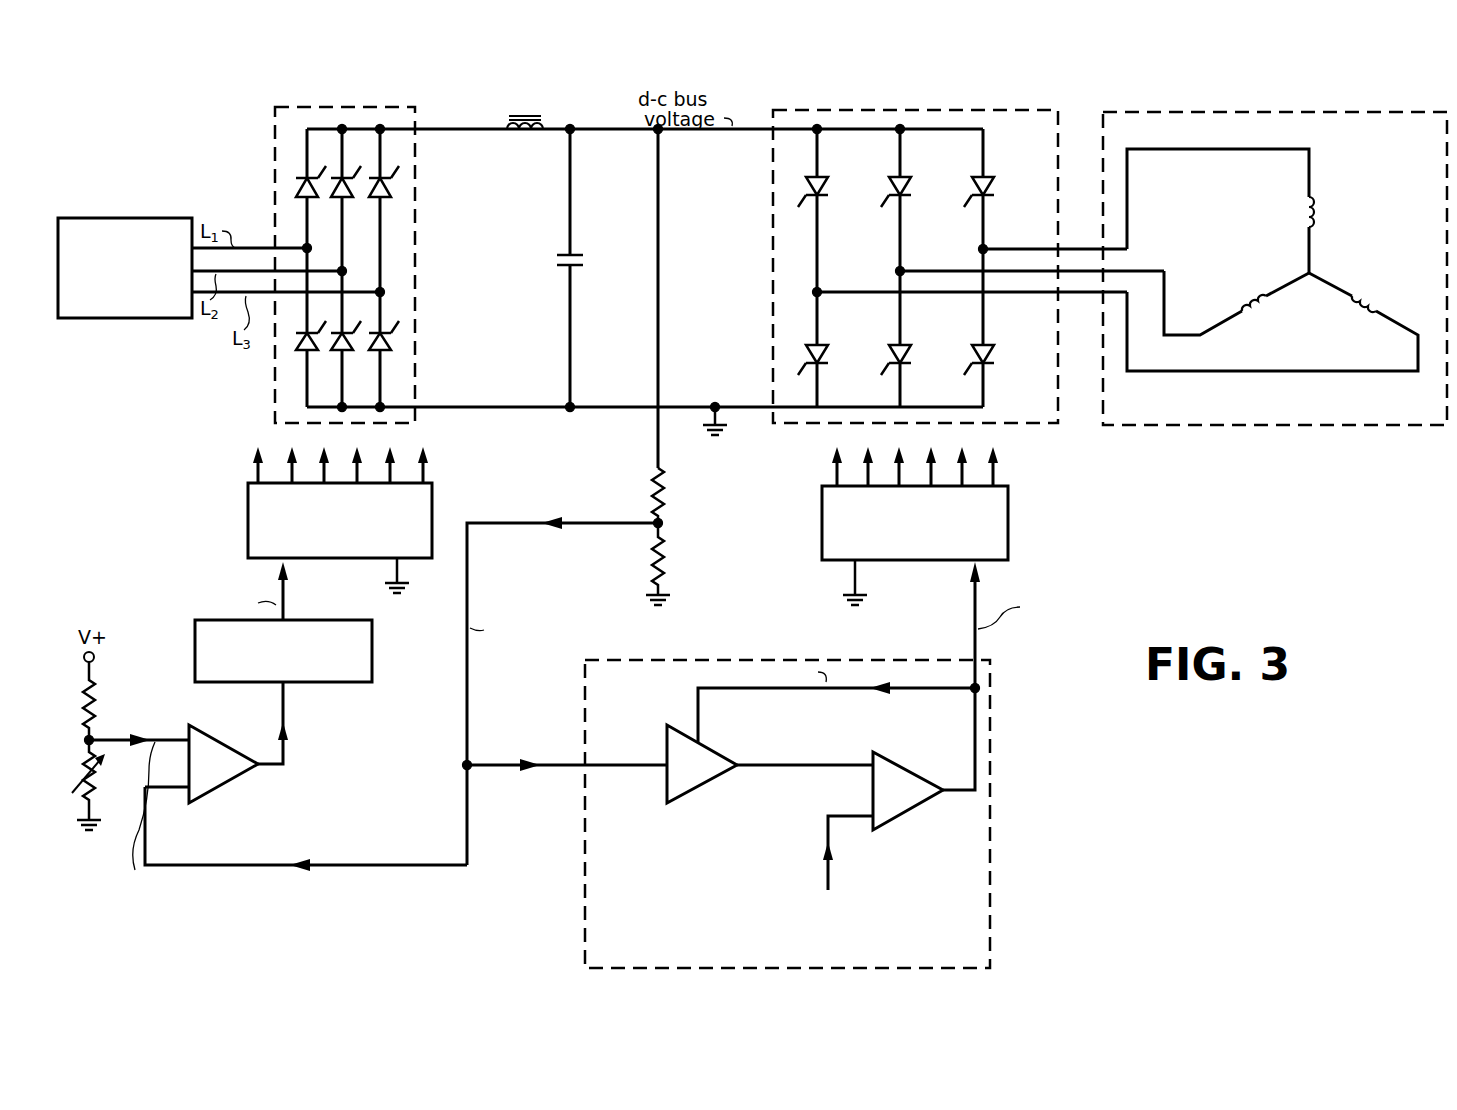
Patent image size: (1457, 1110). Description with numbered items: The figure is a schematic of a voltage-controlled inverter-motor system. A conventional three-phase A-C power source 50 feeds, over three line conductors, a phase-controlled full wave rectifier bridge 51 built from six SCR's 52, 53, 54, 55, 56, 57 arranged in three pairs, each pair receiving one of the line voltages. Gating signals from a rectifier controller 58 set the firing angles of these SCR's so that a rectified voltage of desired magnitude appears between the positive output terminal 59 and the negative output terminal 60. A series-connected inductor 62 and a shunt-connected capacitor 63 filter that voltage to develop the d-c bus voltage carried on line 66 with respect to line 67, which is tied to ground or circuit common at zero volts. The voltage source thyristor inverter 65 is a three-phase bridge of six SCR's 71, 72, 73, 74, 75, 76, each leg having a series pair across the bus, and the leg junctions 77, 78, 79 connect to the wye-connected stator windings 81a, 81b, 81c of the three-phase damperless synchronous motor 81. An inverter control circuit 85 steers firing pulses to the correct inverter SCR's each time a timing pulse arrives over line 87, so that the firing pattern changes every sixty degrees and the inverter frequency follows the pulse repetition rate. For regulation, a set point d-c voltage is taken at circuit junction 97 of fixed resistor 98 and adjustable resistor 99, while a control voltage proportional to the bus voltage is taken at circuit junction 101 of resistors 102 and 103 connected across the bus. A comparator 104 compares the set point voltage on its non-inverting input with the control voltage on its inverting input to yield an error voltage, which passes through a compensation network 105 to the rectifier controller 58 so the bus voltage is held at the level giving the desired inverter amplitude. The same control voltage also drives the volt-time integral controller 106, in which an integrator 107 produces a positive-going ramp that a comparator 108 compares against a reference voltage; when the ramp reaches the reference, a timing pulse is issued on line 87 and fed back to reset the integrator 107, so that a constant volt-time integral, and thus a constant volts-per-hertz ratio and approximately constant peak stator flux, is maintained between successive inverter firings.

The three-phase A-C power source 50 is at (120, 218).
The phase-controlled full wave rectifier bridge 51 is at (414, 107).
The SCR 52 is at (318, 190).
The SCR 53 is at (353, 190).
The SCR 54 is at (391, 190).
The SCR 55 is at (318, 344).
The SCR 56 is at (353, 344).
The SCR 57 is at (391, 344).
The rectifier controller 58 is at (248, 520).
The positive output terminal 59 is at (378, 126).
The negative output terminal 60 is at (387, 407).
The inductor 62 is at (525, 133).
The capacitor 63 is at (556, 262).
The voltage source thyristor inverter 65 is at (1006, 108).
The line 66 is at (632, 133).
The line 67 is at (618, 407).
The SCR 71 is at (805, 184).
The SCR 72 is at (888, 184).
The SCR 73 is at (971, 184).
The SCR 74 is at (805, 352).
The SCR 75 is at (888, 352).
The SCR 76 is at (971, 352).
The circuit junction 77 is at (803, 292).
The circuit junction 78 is at (896, 270).
The circuit junction 79 is at (979, 248).
The three-phase damperless synchronous motor 81 is at (1343, 108).
The stator winding 81a is at (1373, 290).
The stator winding 81b is at (1252, 298).
The stator winding 81c is at (1315, 212).
The inverter control circuit 85 is at (822, 522).
The line 87 is at (972, 618).
The circuit junction 97 is at (92, 744).
The fixed resistor 98 is at (98, 700).
The adjustable resistor 99 is at (95, 792).
The circuit junction 101 is at (644, 522).
The resistor 102 is at (666, 490).
The resistor 103 is at (666, 555).
The comparator 104 is at (230, 784).
The compensation network 105 is at (340, 683).
The volt-time integral controller 106 is at (990, 930).
The integrator 107 is at (724, 747).
The comparator 108 is at (907, 812).